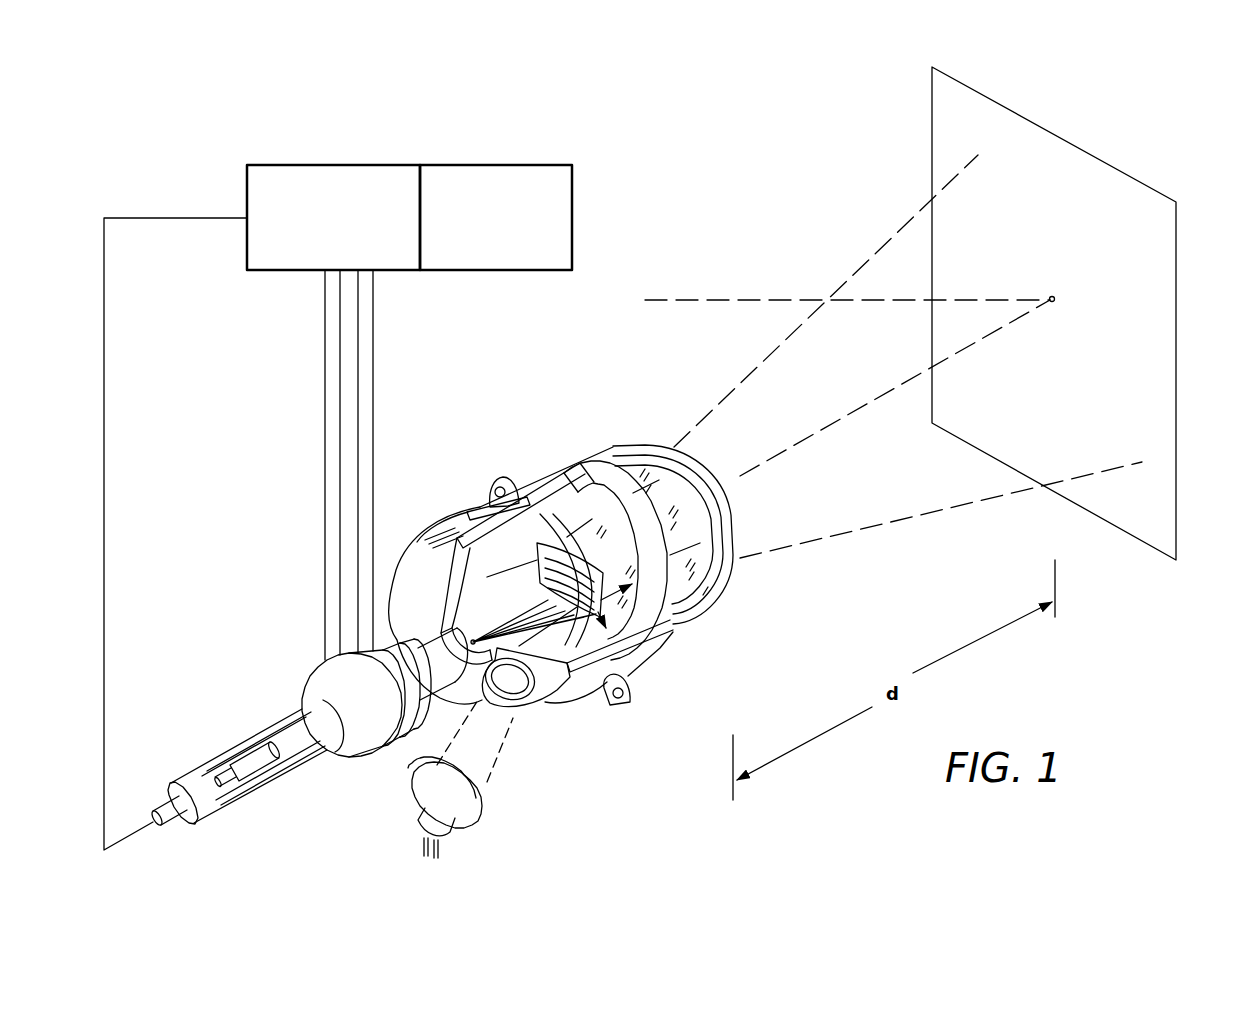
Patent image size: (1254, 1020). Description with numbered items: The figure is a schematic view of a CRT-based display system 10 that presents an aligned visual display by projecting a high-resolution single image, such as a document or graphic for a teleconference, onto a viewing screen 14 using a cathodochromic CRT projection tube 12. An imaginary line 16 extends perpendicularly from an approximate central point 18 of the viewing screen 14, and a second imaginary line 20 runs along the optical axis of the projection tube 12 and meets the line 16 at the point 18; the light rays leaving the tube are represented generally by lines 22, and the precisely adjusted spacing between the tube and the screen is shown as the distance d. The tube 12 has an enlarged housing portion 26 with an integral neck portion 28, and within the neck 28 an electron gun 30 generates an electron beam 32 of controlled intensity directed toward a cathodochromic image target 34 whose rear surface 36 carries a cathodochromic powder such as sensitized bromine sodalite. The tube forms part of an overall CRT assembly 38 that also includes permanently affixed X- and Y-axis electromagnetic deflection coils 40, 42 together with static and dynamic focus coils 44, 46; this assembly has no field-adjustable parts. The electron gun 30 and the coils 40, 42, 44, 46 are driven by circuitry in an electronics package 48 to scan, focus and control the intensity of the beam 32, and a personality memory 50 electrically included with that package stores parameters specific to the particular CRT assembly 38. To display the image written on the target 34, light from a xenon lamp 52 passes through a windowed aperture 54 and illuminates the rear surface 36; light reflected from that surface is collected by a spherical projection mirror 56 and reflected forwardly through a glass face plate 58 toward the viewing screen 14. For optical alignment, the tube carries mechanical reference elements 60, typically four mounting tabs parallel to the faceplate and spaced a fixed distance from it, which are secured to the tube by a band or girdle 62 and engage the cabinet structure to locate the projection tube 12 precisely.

The CRT-based display system 10 is at (689, 212).
The cathodochromic CRT projection tube 12 is at (548, 470).
The viewing screen 14 is at (1177, 247).
The imaginary line 16 is at (738, 298).
The central point 18 is at (1054, 297).
The imaginary line along optical axis 20 is at (808, 436).
The light rays 22 is at (742, 383).
The enlarged housing portion 26 is at (553, 725).
The neck portion 28 is at (312, 768).
The electron gun 30 is at (226, 782).
The electron beam 32 is at (479, 637).
The cathodochromic image target 34 is at (568, 527).
The rear surface 36 is at (536, 560).
The CRT assembly 38 is at (461, 446).
The X-axis electromagnetic deflection coil 40 is at (413, 718).
The Y-axis electromagnetic deflection coil 42 is at (414, 708).
The static focus coil 44 is at (370, 744).
The dynamic focus coil 46 is at (400, 736).
The electronics package 48 is at (328, 165).
The personality memory 50 is at (465, 167).
The xenon lamp 52 is at (472, 818).
The windowed aperture 54 is at (518, 706).
The spherical projection mirror 56 is at (470, 600).
The glass face plate 58 is at (668, 645).
The mechanical reference elements 60 is at (494, 488).
The band or girdle 62 is at (480, 508).